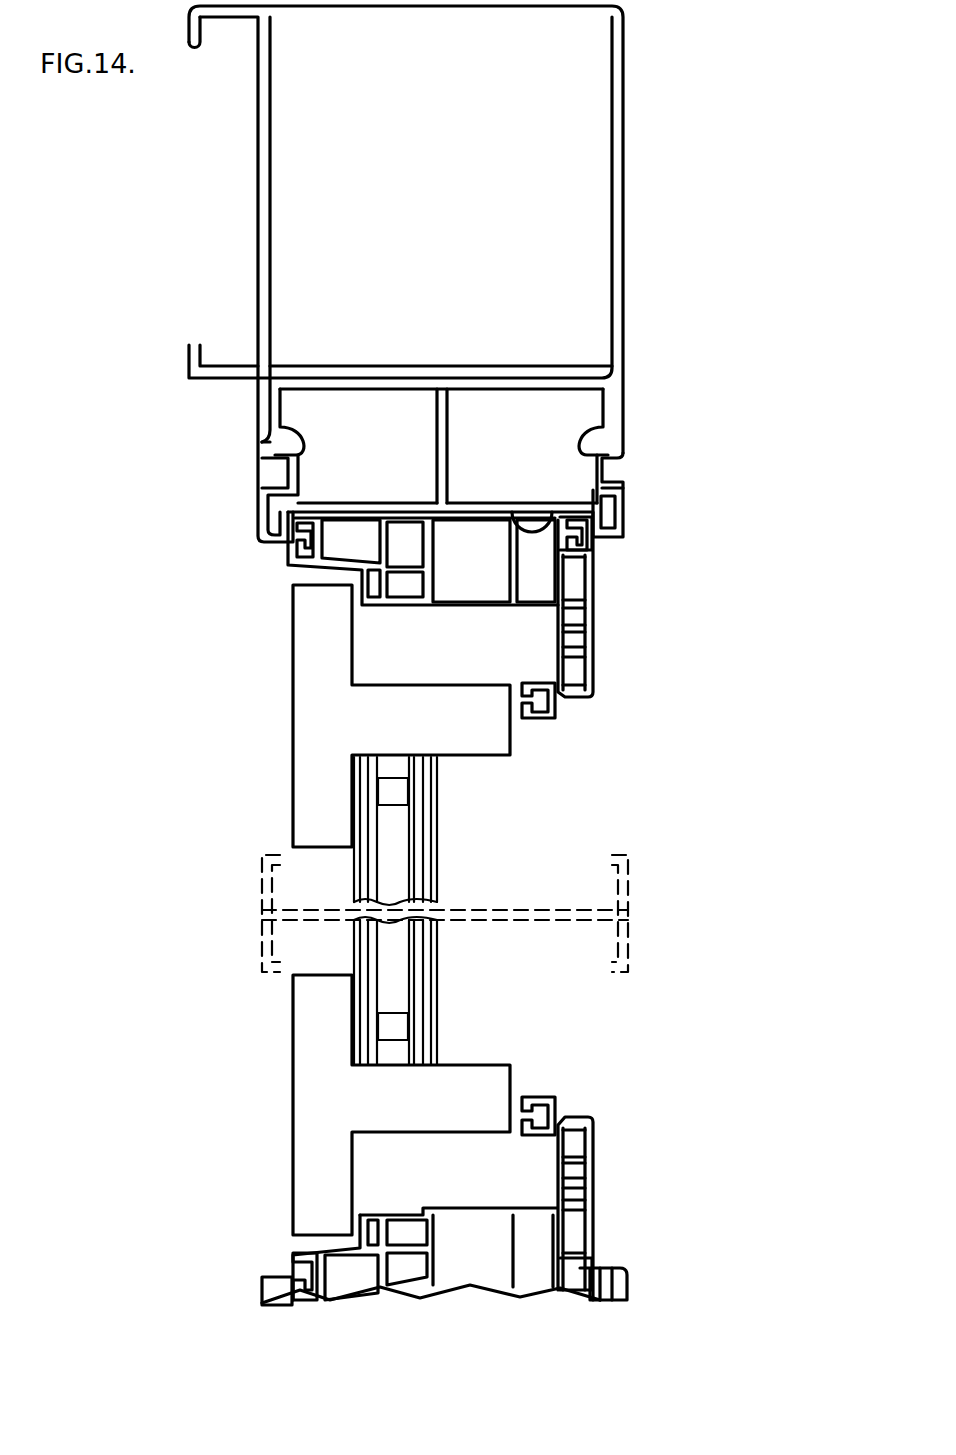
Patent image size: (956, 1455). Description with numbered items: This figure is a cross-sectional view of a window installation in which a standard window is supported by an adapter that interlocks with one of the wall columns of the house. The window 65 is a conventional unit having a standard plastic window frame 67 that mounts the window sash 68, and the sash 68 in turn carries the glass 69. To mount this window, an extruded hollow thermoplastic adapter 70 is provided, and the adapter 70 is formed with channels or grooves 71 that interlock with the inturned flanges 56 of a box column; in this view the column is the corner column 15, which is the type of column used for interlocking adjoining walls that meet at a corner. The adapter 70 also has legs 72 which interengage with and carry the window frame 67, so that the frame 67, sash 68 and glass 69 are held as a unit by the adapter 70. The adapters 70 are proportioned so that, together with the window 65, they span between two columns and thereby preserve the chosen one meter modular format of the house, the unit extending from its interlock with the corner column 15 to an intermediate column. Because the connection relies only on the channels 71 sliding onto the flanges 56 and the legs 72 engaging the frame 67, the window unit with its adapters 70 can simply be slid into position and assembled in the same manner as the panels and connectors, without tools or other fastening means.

The corner column 15 is at (625, 232).
The inturned flanges 56 is at (268, 452).
The window 65 is at (543, 884).
The window frame 67 is at (585, 632).
The window sash 68 is at (497, 738).
The glass 69 is at (425, 837).
The adapter 70 is at (632, 513).
The channels or grooves 71 is at (306, 442).
The legs 72 is at (593, 542).